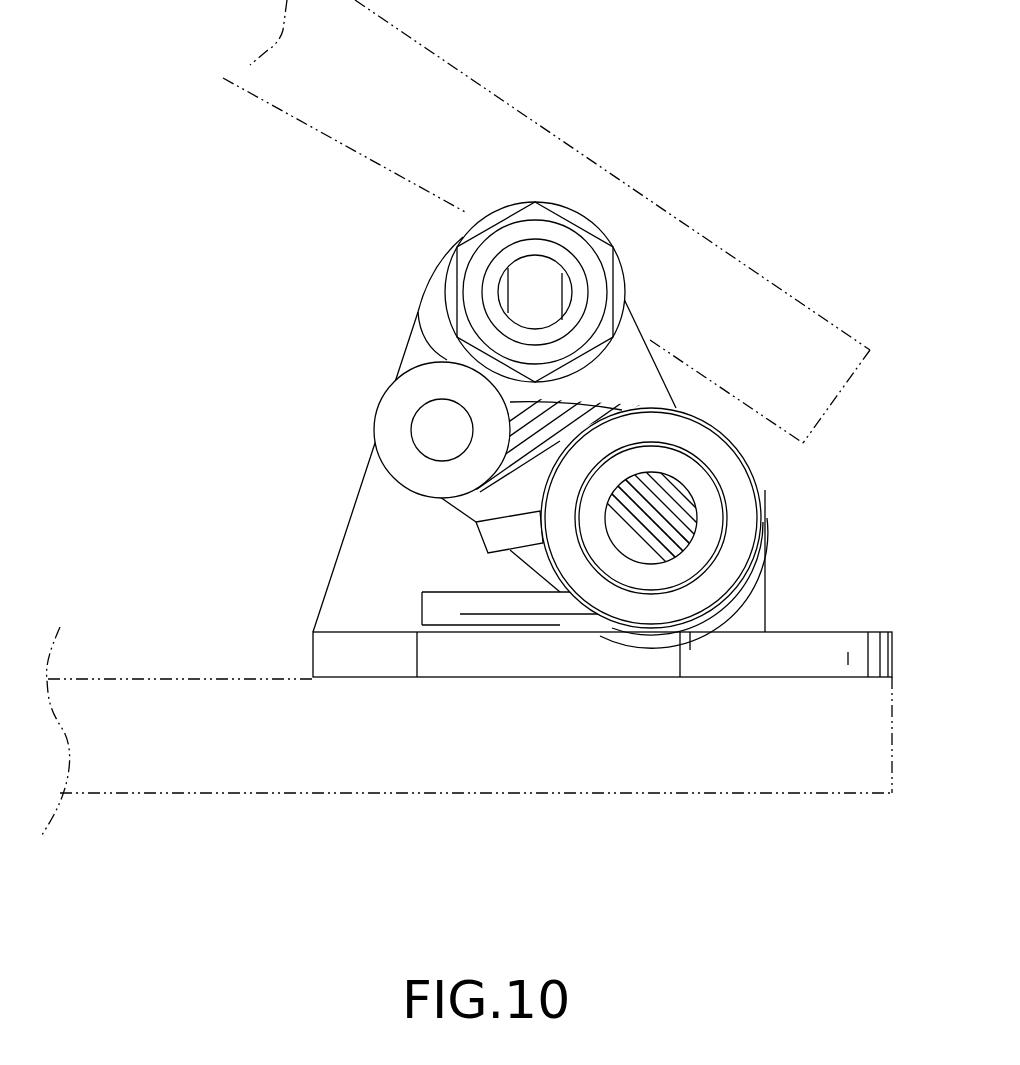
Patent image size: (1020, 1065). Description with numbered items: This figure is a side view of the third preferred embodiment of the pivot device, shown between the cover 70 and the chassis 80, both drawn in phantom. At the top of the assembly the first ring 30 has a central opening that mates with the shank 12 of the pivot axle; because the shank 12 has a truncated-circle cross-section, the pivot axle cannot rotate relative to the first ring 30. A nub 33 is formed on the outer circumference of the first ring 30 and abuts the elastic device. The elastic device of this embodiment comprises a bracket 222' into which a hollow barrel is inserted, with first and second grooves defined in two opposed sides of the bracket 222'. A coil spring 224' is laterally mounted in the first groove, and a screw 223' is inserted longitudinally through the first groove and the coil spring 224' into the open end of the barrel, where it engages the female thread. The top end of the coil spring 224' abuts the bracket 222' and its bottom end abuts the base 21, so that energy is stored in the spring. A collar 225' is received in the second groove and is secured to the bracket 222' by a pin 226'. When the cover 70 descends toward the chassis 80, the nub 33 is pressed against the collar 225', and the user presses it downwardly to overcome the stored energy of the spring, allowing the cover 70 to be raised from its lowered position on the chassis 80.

The cover 70 is at (478, 103).
The chassis 80 is at (330, 783).
The first ring 30 is at (473, 233).
The shank 12 is at (490, 282).
The nub 33 is at (428, 320).
The collar 225' is at (366, 430).
The pin 226' is at (346, 438).
The bracket 222' is at (482, 489).
The screw 223' is at (726, 514).
The coil spring 224' is at (739, 518).
The base 21 is at (753, 642).